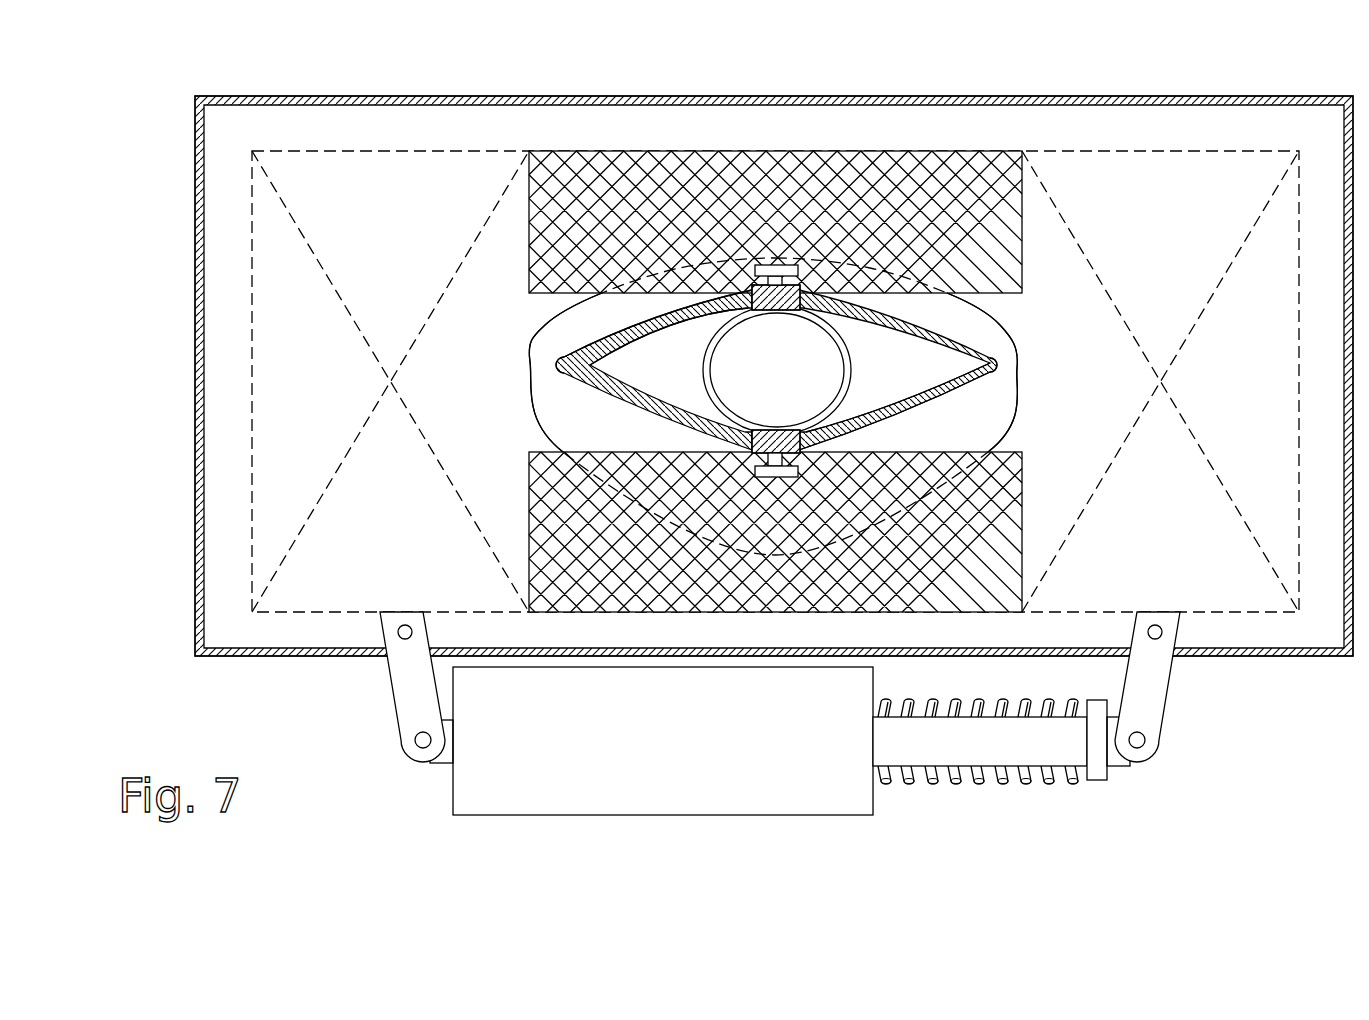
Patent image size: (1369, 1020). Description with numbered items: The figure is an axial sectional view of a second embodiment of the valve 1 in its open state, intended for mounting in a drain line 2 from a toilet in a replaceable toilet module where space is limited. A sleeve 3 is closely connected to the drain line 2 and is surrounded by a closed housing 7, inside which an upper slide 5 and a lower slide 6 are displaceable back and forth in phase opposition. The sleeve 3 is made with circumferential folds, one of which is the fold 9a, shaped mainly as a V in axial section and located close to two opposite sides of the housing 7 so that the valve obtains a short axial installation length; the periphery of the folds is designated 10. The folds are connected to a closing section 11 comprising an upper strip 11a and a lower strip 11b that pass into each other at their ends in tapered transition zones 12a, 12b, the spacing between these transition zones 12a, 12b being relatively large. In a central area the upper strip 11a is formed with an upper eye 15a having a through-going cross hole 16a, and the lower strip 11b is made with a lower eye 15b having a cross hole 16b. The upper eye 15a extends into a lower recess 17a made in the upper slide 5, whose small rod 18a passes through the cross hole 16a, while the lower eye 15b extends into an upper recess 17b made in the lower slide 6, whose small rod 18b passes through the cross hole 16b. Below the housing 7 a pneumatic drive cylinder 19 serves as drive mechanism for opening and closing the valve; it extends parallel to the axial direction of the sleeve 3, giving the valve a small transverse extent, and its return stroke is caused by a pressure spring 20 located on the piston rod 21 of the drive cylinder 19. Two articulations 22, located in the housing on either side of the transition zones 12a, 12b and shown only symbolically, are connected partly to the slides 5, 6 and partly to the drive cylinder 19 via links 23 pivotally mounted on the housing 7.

The valve 1 is at (158, 128).
The drain line 2 is at (830, 375).
The sleeve 3 is at (995, 335).
The upper slide 5 is at (585, 165).
The lower slide 6 is at (658, 595).
The housing 7 is at (300, 656).
The circumferential fold 9a is at (535, 352).
The periphery of the folds 10 is at (995, 442).
The closing section 11 is at (732, 371).
The upper strip 11a is at (625, 347).
The lower strip 11b is at (923, 378).
The tapered transition zone 12a is at (550, 392).
The tapered transition zone 12b is at (995, 370).
The upper eye 15a is at (712, 296).
The lower eye 15b is at (865, 450).
The cross hole 16a is at (728, 317).
The cross hole 16b is at (845, 392).
The lower recess 17a is at (870, 304).
The upper recess 17b is at (745, 434).
The small rod 18a is at (775, 265).
The small rod 18b is at (775, 478).
The pneumatic drive cylinder 19 is at (620, 800).
The pressure spring 20 is at (1045, 780).
The piston rod 21 is at (930, 745).
The articulation 22 is at (400, 690).
The link 23 is at (420, 755).